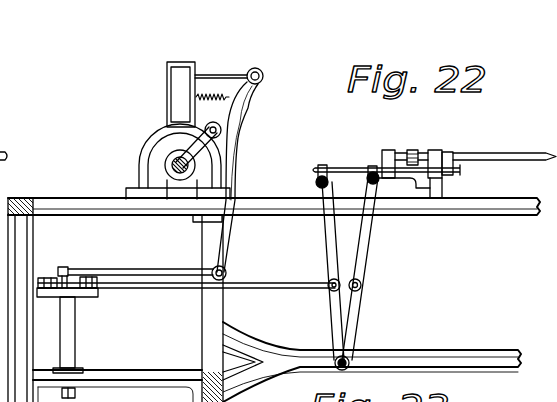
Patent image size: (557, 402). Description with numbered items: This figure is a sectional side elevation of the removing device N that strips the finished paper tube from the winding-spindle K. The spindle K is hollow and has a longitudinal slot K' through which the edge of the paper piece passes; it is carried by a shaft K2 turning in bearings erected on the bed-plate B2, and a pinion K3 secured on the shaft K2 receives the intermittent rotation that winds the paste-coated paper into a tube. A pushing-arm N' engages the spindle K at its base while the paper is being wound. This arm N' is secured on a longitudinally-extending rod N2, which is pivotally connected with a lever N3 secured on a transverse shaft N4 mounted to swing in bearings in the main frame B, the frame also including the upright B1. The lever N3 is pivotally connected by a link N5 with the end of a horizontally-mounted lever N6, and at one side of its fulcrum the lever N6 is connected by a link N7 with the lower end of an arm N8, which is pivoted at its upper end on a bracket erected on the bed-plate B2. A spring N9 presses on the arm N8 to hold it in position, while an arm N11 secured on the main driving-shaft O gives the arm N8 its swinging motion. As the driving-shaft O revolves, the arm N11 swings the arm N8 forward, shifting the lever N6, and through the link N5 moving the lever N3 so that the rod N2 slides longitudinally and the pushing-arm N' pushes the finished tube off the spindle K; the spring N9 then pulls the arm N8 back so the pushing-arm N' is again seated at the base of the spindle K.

The main frame B is at (372, 350).
The upright post of frame B1 is at (34, 240).
The bed-plate B2 is at (497, 212).
The removing device N is at (240, 308).
The pushing-arm N' is at (394, 177).
The longitudinally-extending rod N2 is at (372, 160).
The lever N3 is at (326, 239).
The shaft N4 is at (352, 354).
The link N5 is at (267, 290).
The horizontally-mounted lever N6 is at (96, 300).
The link N7 is at (142, 263).
The arm N8 is at (231, 240).
The spring N9 is at (207, 100).
The arm N11 is at (205, 137).
The main driving-shaft O is at (166, 167).
The winding-spindle K is at (475, 147).
The longitudinal slot K' is at (443, 169).
The shaft K2 is at (431, 151).
The pinion K3 is at (415, 149).